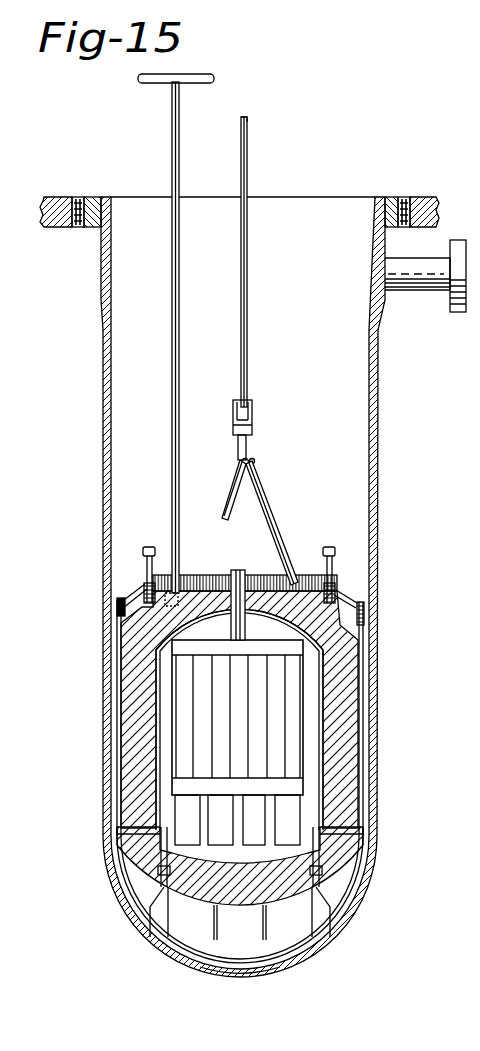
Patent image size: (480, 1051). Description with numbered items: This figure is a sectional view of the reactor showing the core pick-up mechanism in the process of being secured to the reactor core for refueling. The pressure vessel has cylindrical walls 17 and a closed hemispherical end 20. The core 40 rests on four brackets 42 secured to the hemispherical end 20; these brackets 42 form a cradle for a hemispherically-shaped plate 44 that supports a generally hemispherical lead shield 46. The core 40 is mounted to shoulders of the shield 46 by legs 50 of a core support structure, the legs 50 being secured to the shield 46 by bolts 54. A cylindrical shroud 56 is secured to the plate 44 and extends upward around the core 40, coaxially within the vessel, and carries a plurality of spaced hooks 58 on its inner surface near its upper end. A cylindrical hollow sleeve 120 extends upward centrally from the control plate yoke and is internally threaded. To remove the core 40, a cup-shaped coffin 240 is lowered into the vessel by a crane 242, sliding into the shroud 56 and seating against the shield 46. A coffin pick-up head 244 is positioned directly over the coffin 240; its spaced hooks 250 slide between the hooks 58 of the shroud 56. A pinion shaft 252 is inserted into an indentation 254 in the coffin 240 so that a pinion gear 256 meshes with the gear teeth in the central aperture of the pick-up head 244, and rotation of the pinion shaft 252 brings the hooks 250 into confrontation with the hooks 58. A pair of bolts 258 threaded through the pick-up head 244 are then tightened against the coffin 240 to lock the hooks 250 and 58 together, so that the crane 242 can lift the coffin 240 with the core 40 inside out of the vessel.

The cylindrical walls 17 is at (374, 700).
The closed hemispherical end 20 is at (240, 978).
The core 40 is at (250, 745).
The brackets 42 is at (150, 931).
The hemispherically-shaped plate 44 is at (232, 908).
The shield 46 is at (252, 894).
The legs 50 is at (316, 791).
The bolts 54 is at (303, 851).
The cylindrical shroud 56 is at (117, 685).
The hooks 58 is at (117, 610).
The cylindrical hollow sleeve 120 is at (238, 570).
The cup-shaped coffin 240 is at (130, 738).
The crane 242 is at (263, 496).
The coffin pick-up head 244 is at (140, 592).
The hooks 250 is at (365, 616).
The pinion shaft 252 is at (172, 247).
The indentation 254 is at (179, 601).
The pinion gear 256 is at (180, 588).
The bolts 258 is at (149, 546).